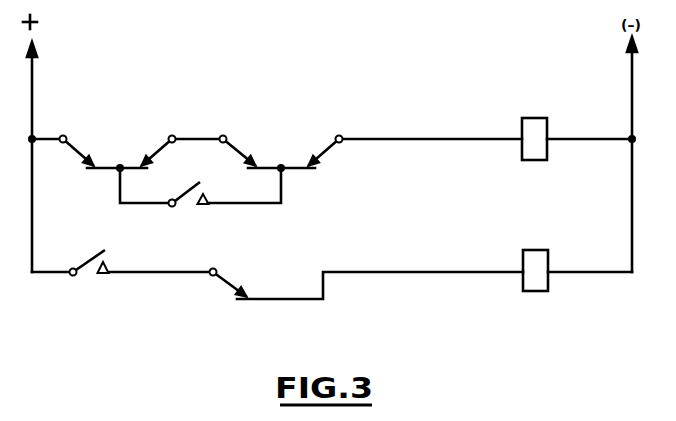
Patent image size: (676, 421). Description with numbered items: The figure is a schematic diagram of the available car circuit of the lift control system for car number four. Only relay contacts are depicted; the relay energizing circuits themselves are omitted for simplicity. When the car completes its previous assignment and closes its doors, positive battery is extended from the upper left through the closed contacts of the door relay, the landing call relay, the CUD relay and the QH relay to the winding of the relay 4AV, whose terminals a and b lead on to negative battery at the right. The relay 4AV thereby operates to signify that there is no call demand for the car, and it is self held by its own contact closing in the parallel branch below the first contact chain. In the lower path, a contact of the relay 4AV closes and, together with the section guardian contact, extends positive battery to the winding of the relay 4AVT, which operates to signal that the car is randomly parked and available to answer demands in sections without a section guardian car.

The relay 4AV is at (532, 123).
The relay 4AVT is at (533, 255).